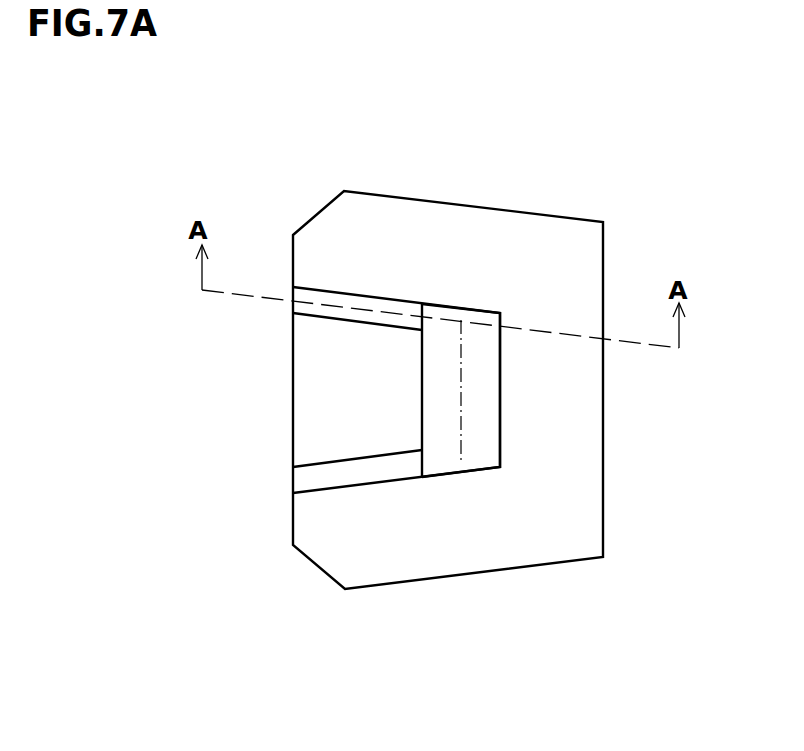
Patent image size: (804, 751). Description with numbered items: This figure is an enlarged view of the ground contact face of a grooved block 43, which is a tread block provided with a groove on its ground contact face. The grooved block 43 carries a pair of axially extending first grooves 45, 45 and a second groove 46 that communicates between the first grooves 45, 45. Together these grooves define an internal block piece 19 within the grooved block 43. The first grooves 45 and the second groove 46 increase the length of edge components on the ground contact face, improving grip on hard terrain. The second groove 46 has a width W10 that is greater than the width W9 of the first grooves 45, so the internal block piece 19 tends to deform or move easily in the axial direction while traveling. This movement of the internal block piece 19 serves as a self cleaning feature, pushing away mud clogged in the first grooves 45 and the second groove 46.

The grooved block 43 is at (565, 200).
The internal block piece 19 is at (313, 355).
The first grooves 45 is at (392, 319).
The second groove 46 is at (443, 386).
The width of the first grooves W9 is at (388, 420).
The width of the second groove W10 is at (436, 424).